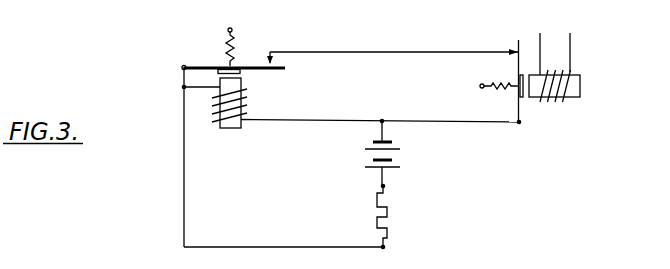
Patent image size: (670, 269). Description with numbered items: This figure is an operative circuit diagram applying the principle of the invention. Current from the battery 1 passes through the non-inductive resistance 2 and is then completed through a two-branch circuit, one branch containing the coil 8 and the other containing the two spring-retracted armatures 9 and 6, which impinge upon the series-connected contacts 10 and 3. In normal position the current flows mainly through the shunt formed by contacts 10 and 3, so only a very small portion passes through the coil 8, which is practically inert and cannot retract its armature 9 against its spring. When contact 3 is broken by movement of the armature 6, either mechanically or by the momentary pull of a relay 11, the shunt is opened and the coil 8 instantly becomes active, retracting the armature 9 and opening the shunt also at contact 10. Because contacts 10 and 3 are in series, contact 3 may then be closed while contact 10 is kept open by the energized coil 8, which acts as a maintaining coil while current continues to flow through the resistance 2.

The battery 1 is at (390, 153).
The resistance 2 is at (391, 217).
The contact 3 is at (509, 74).
The armature 6 is at (501, 97).
The coil 8 is at (238, 103).
The armature 9 is at (220, 48).
The contact 10 is at (276, 58).
The relay 11 is at (555, 81).